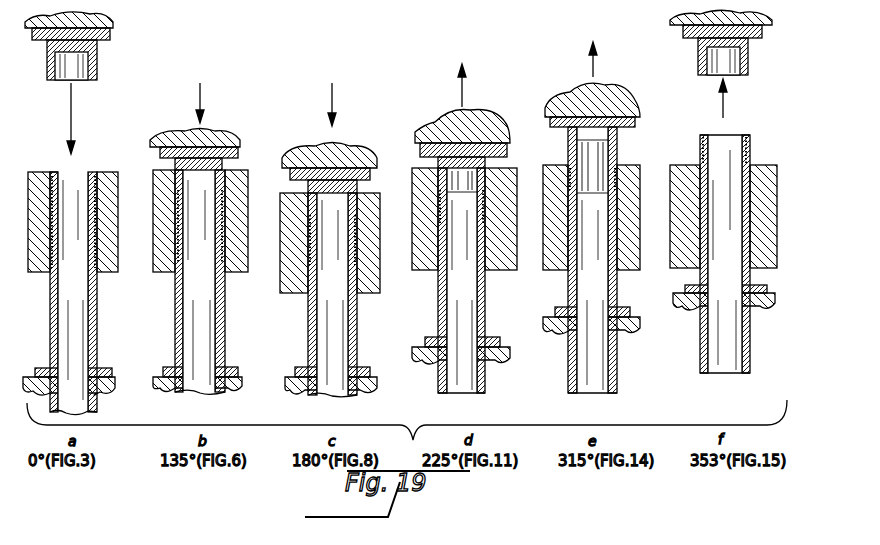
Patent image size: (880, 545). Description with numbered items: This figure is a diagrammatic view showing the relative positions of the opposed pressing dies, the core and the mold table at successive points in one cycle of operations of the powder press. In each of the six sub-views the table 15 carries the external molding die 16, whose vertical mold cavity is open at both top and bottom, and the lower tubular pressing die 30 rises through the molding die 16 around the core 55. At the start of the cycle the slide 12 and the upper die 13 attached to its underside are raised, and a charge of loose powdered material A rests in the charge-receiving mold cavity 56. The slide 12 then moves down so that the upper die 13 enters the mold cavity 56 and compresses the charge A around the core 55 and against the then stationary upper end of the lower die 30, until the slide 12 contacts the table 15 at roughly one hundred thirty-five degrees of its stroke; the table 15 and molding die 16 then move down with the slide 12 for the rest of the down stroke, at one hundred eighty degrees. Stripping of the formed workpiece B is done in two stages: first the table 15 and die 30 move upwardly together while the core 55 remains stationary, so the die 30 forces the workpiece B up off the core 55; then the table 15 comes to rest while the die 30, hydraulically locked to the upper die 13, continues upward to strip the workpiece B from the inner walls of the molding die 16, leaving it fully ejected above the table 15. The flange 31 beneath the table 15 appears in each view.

The die carrying slide 12 is at (113, 30).
The upper die 13 is at (97, 63).
The table 15 is at (153, 204).
The external molding die 16 is at (240, 192).
The lower tubular pressing die 30 is at (97, 315).
The flange 31 is at (105, 393).
The core 55 is at (82, 313).
The charge-receiving mold cavity 56 is at (56, 172).
The powder charge A is at (100, 172).
The workpiece B is at (355, 222).